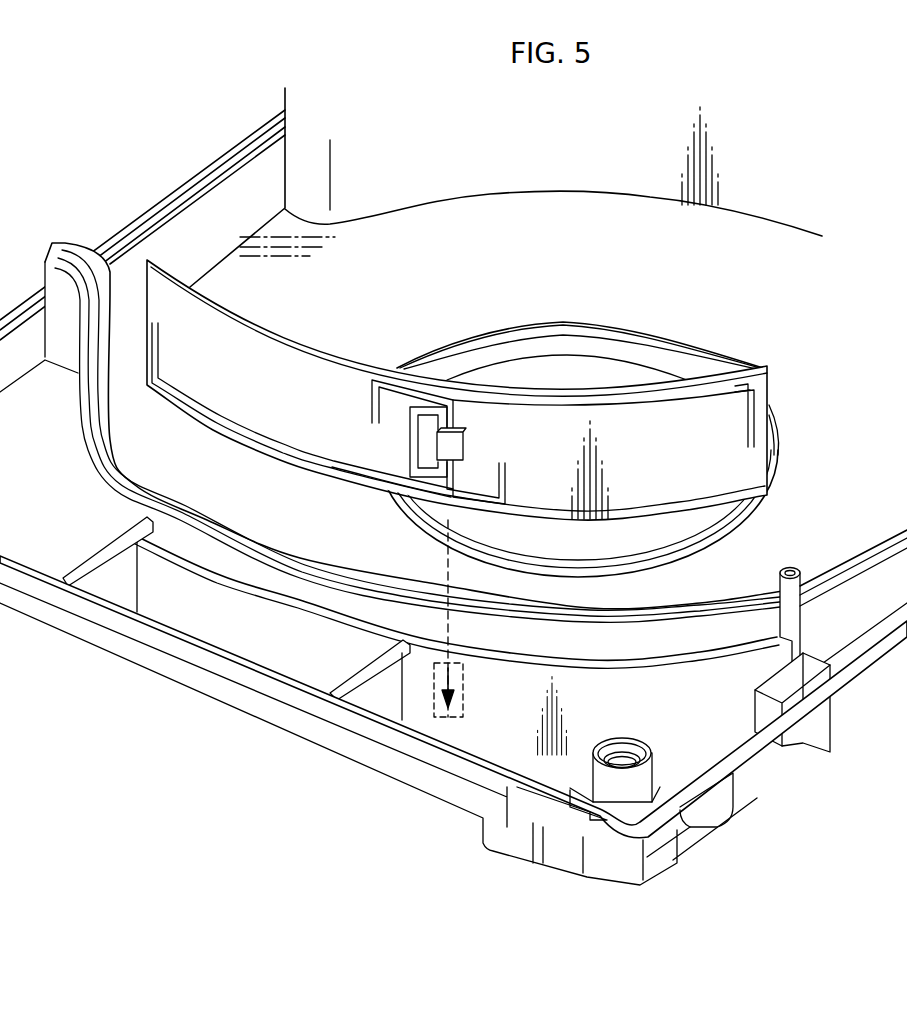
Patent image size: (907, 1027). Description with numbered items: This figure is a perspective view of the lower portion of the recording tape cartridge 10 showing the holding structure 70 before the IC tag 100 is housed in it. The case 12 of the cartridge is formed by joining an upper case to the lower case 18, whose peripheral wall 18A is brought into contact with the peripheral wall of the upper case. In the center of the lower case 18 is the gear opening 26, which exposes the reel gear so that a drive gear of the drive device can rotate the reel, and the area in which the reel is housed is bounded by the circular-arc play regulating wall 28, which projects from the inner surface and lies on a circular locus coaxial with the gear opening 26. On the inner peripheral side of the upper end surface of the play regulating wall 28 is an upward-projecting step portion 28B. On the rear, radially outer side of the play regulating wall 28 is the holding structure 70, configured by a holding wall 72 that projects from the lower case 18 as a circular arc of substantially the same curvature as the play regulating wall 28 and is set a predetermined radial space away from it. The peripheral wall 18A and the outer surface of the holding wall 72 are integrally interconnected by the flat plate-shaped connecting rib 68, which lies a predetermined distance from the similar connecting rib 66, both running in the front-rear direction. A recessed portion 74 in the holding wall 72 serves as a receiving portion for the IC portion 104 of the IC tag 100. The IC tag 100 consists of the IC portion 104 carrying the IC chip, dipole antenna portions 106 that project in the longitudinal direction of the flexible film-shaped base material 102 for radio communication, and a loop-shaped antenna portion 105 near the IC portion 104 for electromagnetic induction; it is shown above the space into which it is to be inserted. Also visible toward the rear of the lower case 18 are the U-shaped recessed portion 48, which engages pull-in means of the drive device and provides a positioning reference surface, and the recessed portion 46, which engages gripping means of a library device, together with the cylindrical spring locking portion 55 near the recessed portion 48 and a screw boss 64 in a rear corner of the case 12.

The recording tape cartridge 10 is at (167, 210).
The case 12 is at (237, 142).
The lower case 18 is at (137, 215).
The peripheral wall 18A is at (213, 220).
The gear opening 26 is at (610, 350).
The play regulating wall 28 is at (411, 364).
The step portion 28B is at (67, 260).
The recessed portion 46 is at (710, 810).
The recessed portion 48 is at (817, 717).
The spring locking portion 55 is at (793, 590).
The screw boss 64 is at (623, 787).
The connecting rib 66 is at (105, 582).
The connecting rib 68 is at (363, 690).
The holding structure 70 is at (208, 624).
The holding wall 72 is at (265, 635).
The recessed portion 74 is at (436, 658).
The IC tag 100 is at (494, 390).
The base material 102 is at (277, 367).
The IC portion 104 is at (453, 447).
The antenna portion 105 is at (413, 448).
The antenna portions 106 is at (273, 453).